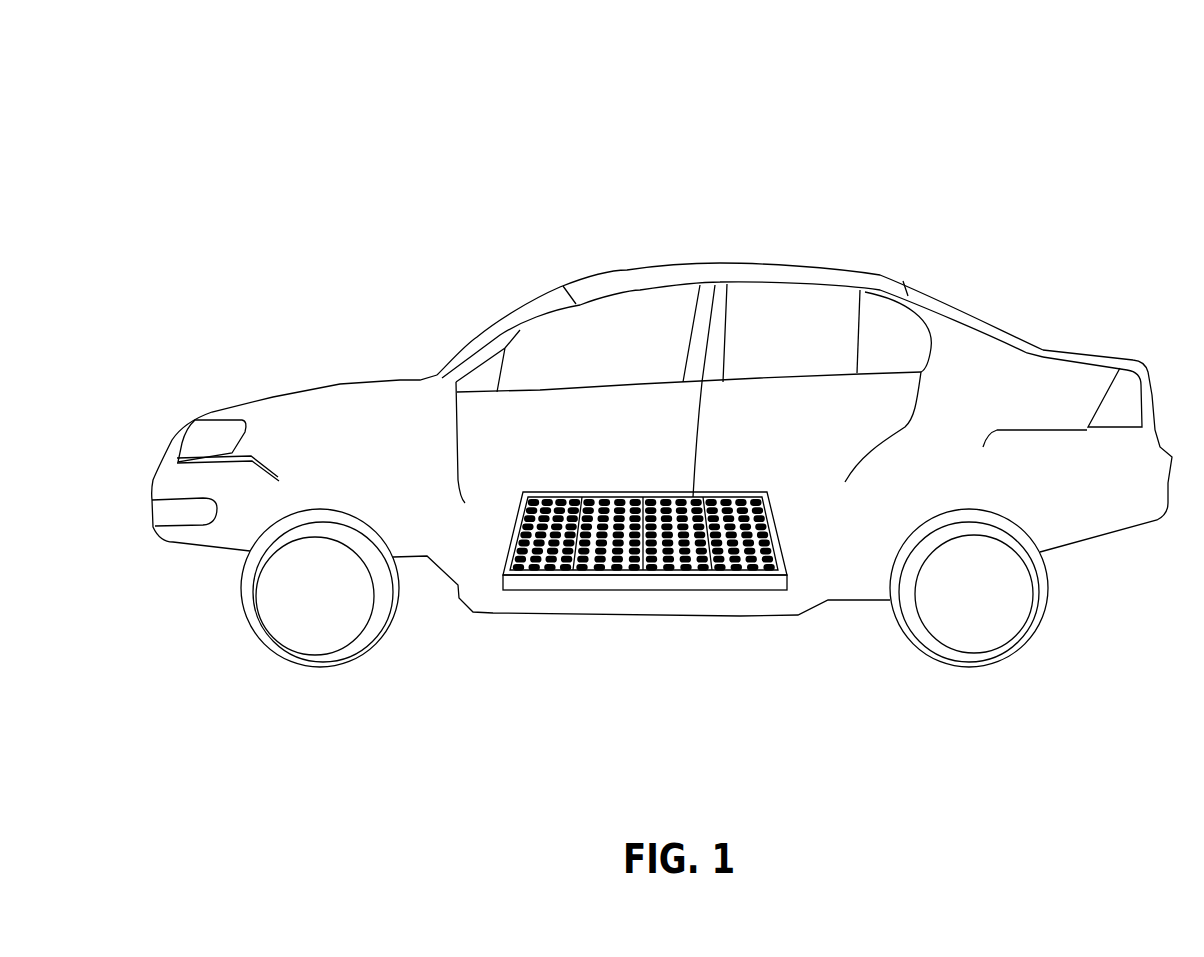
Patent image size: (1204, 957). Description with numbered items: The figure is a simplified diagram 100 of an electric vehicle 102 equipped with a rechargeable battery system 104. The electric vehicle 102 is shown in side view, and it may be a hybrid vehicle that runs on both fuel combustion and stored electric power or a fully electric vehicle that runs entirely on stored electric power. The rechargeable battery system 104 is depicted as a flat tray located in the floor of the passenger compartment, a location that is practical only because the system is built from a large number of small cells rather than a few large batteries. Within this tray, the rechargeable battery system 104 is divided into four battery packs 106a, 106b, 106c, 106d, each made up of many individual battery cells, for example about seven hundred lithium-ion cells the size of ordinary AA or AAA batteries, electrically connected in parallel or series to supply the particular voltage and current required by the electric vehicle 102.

The simplified diagram 100 is at (1165, 138).
The electric vehicle 102 is at (716, 262).
The rechargeable battery system 104 is at (647, 590).
The battery pack 106a is at (539, 497).
The battery pack 106b is at (606, 497).
The battery pack 106c is at (691, 497).
The battery pack 106d is at (758, 497).